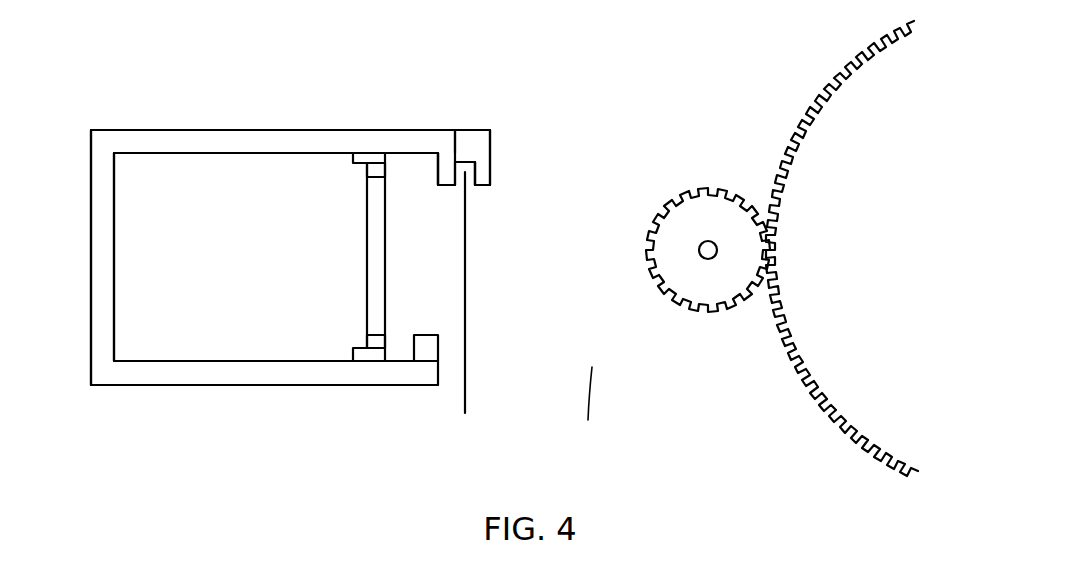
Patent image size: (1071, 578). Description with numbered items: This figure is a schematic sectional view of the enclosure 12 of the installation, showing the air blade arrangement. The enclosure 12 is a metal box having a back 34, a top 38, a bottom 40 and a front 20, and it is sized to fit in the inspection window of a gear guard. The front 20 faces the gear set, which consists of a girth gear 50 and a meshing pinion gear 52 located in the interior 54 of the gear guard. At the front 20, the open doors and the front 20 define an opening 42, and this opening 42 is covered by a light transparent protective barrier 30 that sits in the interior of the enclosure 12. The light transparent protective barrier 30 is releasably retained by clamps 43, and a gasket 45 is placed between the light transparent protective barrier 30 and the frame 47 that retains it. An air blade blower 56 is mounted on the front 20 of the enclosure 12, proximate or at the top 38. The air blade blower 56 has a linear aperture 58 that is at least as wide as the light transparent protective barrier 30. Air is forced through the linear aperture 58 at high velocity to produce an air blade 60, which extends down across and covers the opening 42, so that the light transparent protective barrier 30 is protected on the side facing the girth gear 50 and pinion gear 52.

The enclosure 12 is at (82, 88).
The front 20 is at (442, 173).
The light transparent protective barrier 30 is at (370, 285).
The back 34 is at (103, 252).
The top 38 is at (273, 140).
The bottom 40 is at (166, 372).
The opening 42 is at (433, 263).
The clamps 43 is at (360, 157).
The gasket 45 is at (378, 172).
The frame 47 is at (377, 160).
The girth gear 50 is at (857, 72).
The pinion gear 52 is at (710, 213).
The interior 54 is at (587, 411).
The air blade blower 56 is at (480, 143).
The linear aperture 58 is at (468, 178).
The air blade 60 is at (465, 385).